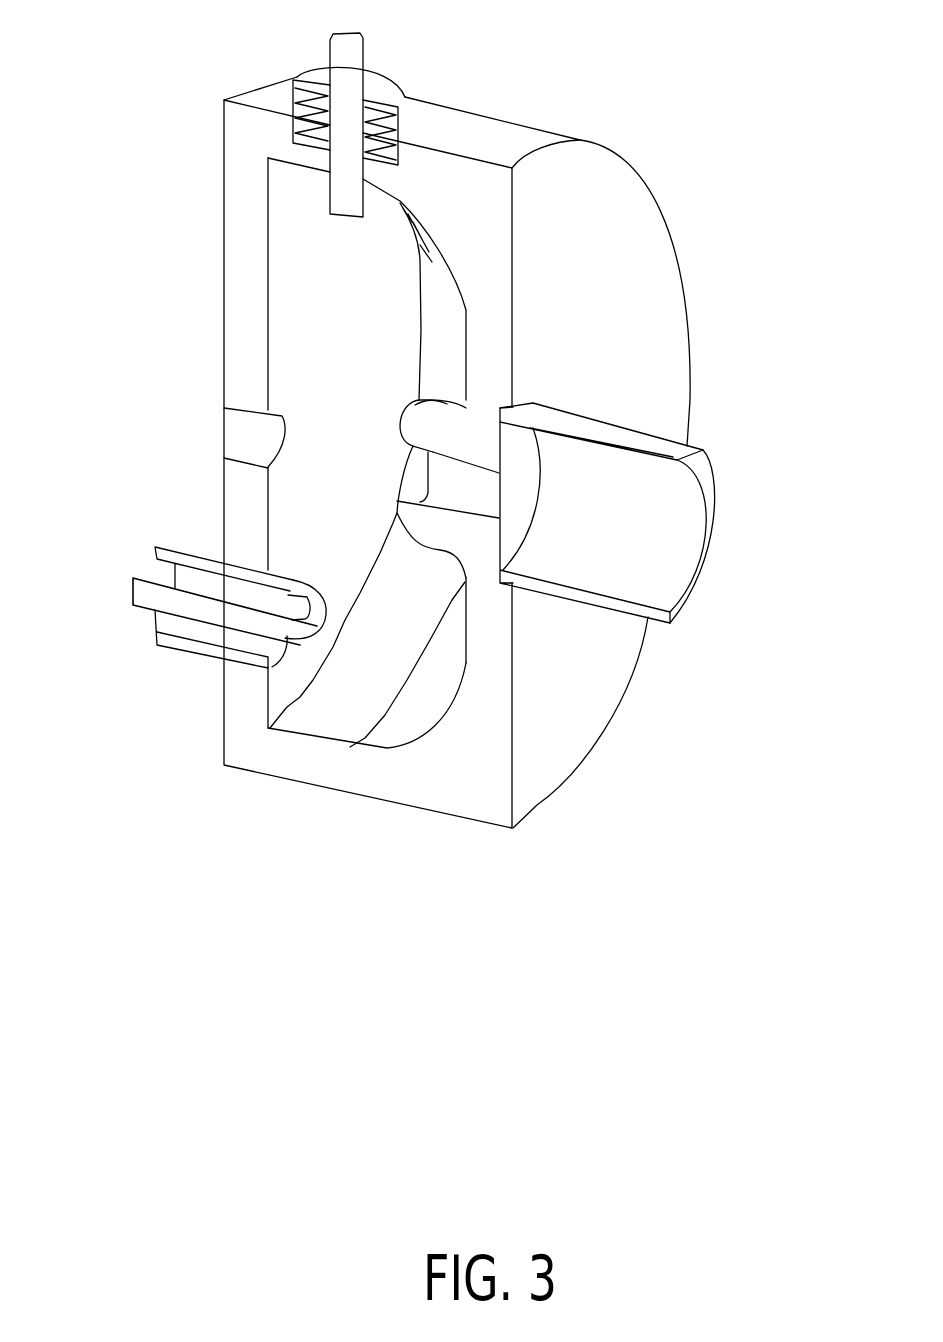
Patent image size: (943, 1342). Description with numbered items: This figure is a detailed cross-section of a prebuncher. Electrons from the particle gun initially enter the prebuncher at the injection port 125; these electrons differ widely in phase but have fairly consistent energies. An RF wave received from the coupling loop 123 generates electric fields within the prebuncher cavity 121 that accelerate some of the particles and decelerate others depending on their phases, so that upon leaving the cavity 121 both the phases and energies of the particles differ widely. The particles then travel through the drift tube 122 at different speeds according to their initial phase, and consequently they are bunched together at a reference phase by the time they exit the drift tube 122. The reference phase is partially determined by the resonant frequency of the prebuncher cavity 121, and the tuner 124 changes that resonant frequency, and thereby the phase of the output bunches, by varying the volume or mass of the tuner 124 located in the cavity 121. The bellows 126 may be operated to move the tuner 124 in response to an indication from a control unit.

The prebuncher cavity 121 is at (290, 313).
The drift tube 122 is at (707, 458).
The coupling loop 123 is at (145, 592).
The tuner 124 is at (380, 85).
The injection port 125 is at (233, 442).
The bellows 126 is at (300, 102).